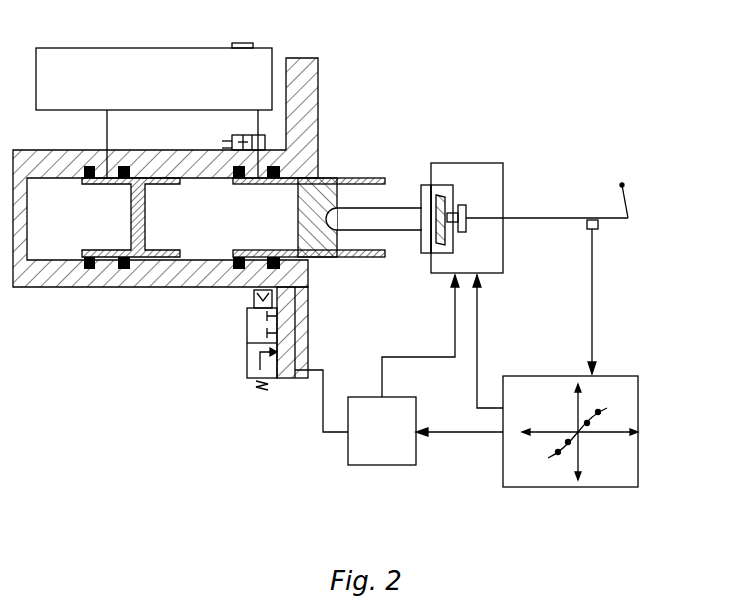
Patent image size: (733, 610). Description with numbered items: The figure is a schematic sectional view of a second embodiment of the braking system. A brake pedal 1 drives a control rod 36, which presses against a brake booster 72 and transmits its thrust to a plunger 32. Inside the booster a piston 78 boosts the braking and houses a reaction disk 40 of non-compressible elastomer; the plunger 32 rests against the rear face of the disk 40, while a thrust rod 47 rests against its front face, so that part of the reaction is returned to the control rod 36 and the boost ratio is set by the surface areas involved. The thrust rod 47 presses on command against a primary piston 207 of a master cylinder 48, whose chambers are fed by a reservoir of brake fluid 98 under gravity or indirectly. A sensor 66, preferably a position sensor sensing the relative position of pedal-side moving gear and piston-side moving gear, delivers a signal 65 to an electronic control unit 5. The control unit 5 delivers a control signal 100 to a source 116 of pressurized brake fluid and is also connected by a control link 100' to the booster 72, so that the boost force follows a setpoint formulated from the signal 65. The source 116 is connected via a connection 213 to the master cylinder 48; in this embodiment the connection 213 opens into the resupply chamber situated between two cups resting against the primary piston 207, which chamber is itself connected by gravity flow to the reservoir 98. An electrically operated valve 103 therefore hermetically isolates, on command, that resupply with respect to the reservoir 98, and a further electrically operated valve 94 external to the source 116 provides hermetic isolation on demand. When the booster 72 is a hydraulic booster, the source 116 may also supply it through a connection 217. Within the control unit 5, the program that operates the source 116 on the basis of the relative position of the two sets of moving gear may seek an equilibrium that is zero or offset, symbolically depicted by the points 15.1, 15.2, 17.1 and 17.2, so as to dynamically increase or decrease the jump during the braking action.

The reservoir of brake fluid 98 is at (132, 48).
The electrically operated valve 103 is at (232, 142).
The master cylinder 48 is at (120, 287).
The primary piston 207 is at (345, 178).
The thrust rod 47 is at (380, 200).
The brake booster 72 is at (503, 185).
The piston 78 is at (437, 195).
The reaction disk 40 is at (444, 205).
The plunger 32 is at (460, 224).
The control rod 36 is at (571, 218).
The sensor 66 is at (598, 229).
The signal 65 is at (593, 305).
The brake pedal 1 is at (628, 218).
The connection 213 is at (308, 300).
The electrically operated valve 94 is at (247, 365).
The connection 217 is at (455, 330).
The control link 100' is at (512, 341).
The control signal 100 is at (459, 417).
The source of pressurized brake fluid 116 is at (381, 465).
The electronic control unit 5 is at (618, 487).
The point 17.2 is at (598, 412).
The point 17.1 is at (587, 423).
The point 15.2 is at (558, 452).
The point 15.1 is at (568, 442).